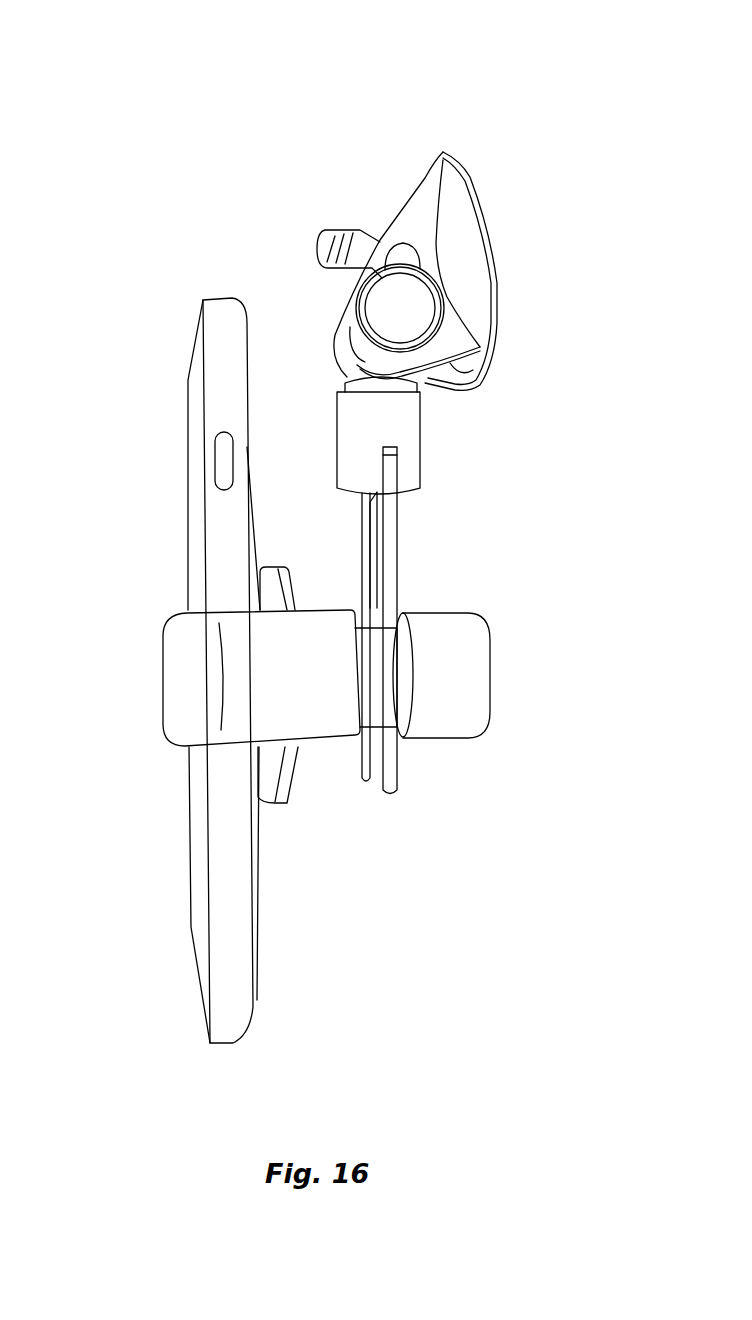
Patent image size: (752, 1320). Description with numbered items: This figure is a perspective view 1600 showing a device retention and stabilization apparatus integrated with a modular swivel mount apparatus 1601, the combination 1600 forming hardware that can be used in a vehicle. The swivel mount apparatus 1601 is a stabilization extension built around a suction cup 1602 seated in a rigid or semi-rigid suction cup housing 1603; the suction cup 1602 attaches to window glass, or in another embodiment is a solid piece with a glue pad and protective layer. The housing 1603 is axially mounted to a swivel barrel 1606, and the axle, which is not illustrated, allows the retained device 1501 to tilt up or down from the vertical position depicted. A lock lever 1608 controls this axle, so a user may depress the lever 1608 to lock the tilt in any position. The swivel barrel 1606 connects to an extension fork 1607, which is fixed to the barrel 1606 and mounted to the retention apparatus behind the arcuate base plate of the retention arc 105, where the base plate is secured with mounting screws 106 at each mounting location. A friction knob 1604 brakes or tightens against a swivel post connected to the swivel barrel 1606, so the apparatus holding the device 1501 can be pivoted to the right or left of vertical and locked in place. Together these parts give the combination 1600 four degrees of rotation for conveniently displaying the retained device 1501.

The perspective view / hardware combination 1600 is at (277, 120).
The modular swivel mount apparatus 1601 is at (520, 280).
The suction cup 1602 is at (487, 207).
The suction cup housing 1603 is at (428, 216).
The friction knob 1604 is at (447, 313).
The swivel barrel 1606 is at (420, 440).
The extension fork 1607 is at (357, 562).
The lock lever 1608 is at (313, 248).
The device 1501 is at (187, 490).
The retention arc 105 is at (498, 667).
The mounting screws 106 is at (297, 775).